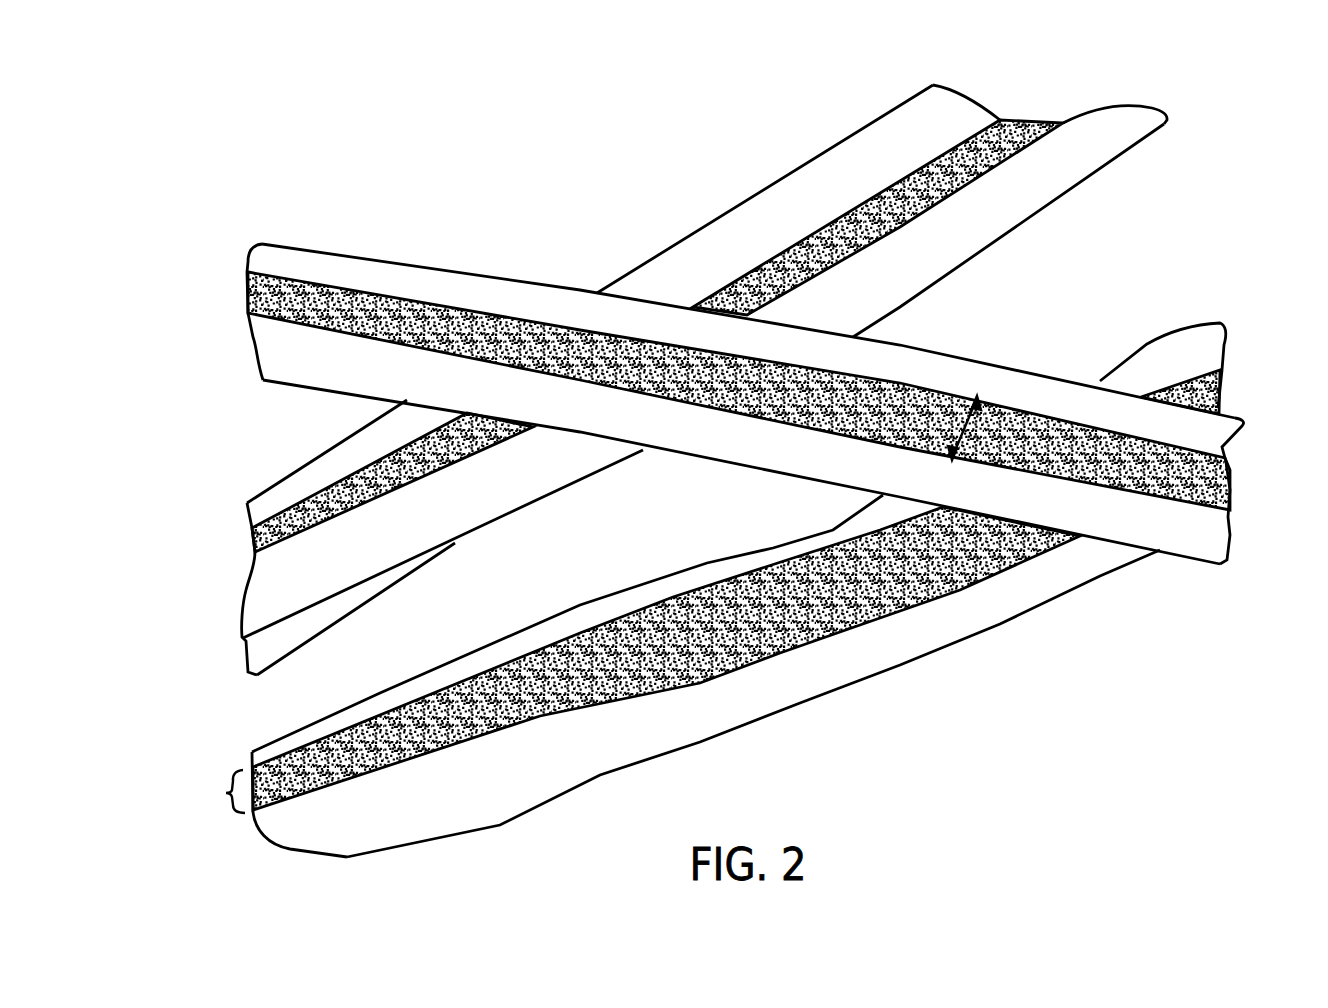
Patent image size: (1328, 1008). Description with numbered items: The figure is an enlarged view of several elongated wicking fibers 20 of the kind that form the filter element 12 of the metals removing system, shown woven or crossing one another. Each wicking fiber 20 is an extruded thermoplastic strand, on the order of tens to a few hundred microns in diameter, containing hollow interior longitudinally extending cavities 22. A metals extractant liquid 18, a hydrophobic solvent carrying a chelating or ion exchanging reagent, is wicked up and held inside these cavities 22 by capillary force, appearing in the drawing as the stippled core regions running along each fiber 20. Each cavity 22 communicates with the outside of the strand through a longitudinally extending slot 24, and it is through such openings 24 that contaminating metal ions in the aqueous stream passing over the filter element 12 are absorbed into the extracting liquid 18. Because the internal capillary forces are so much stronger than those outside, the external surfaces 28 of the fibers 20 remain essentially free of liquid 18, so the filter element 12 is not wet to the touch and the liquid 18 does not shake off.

The filter element 12 is at (1185, 291).
The metals extractant liquid 18 is at (967, 157).
The wicking fiber 20 is at (1040, 173).
The cavity 22 is at (290, 303).
The slot 24 is at (958, 405).
The external surface 28 is at (680, 273).